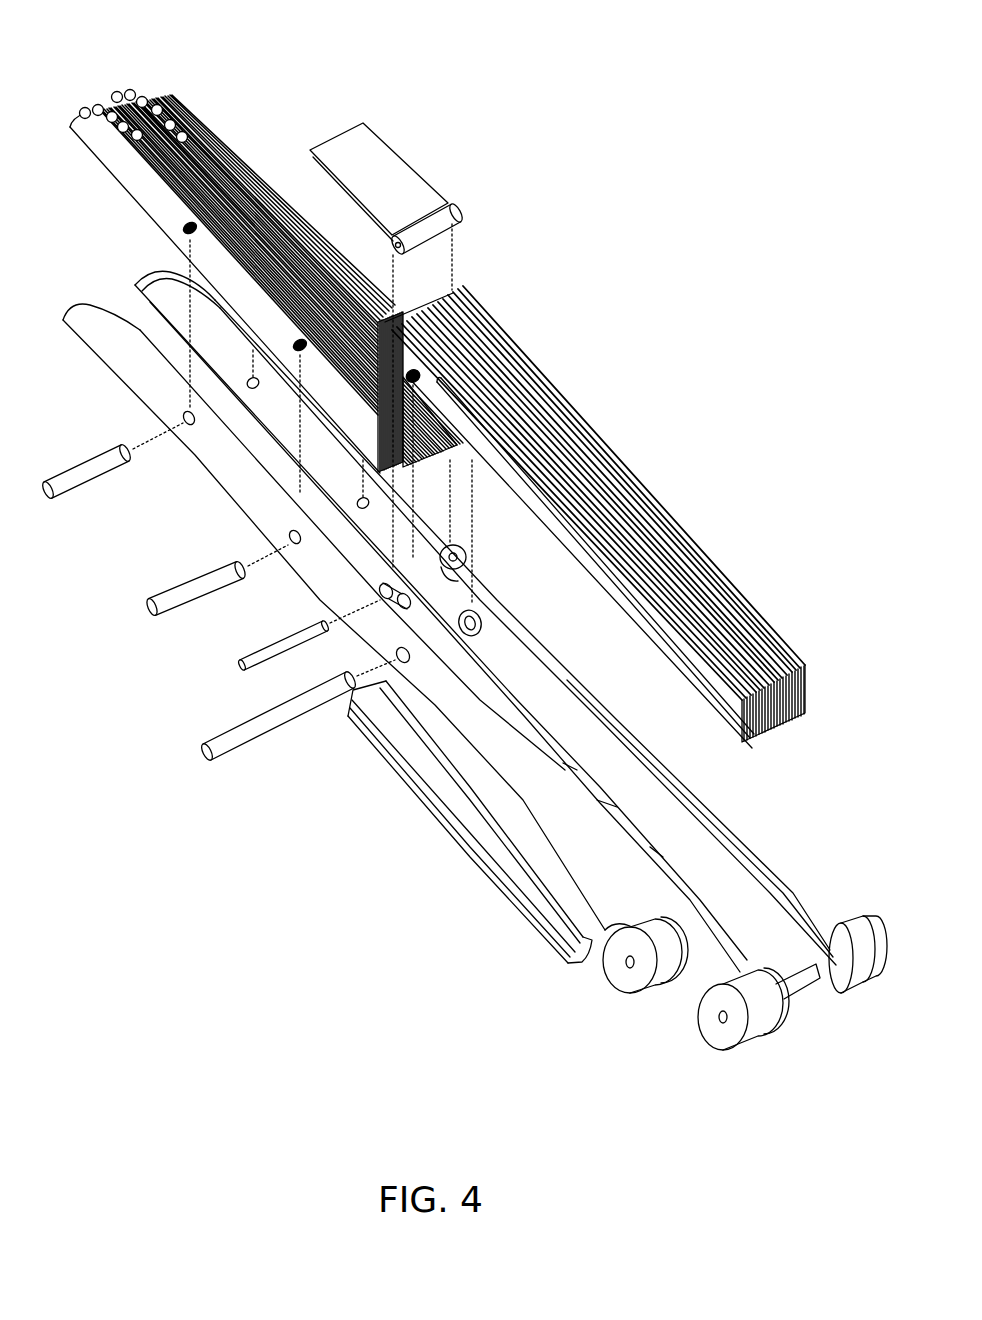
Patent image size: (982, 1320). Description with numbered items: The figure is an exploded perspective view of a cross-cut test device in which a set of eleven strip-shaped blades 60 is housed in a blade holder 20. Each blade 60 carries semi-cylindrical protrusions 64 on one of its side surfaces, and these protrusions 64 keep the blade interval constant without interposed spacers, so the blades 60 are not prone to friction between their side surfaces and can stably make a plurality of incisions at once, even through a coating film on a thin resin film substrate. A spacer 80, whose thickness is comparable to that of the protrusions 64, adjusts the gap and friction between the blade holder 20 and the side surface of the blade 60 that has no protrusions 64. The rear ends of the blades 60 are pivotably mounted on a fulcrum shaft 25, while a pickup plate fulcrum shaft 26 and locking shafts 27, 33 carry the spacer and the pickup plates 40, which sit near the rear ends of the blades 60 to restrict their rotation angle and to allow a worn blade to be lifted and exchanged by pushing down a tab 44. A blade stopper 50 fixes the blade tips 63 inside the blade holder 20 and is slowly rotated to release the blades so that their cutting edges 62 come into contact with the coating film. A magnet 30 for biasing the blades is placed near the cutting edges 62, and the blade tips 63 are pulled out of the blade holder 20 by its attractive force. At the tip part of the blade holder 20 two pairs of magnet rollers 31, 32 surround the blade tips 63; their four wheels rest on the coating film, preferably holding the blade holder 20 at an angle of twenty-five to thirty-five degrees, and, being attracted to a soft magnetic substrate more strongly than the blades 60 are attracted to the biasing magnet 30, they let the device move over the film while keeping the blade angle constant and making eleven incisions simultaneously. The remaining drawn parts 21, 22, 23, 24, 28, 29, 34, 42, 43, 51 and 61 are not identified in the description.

The blade holder 20 is at (578, 835).
The hole 21 is at (397, 654).
The hole 22 is at (290, 539).
The hole 23 is at (182, 414).
The pin 24 is at (378, 590).
The fulcrum shaft 25 is at (202, 756).
The pickup plate fulcrum shaft 26 is at (150, 615).
The locking shaft 27 is at (92, 485).
The rod 28 is at (235, 655).
The tray 29 is at (432, 807).
The magnet 30 is at (665, 855).
The magnet rollers 31 is at (883, 983).
The magnet rollers 32 is at (670, 978).
The locking shaft 33 is at (725, 1017).
The roller shaft 34 is at (628, 968).
The pickup plates 40 is at (227, 142).
The hole 42 is at (196, 224).
The hole 43 is at (305, 338).
The tab 44 is at (150, 100).
The blade stopper 50 is at (392, 185).
The hinge cylinder 51 is at (412, 239).
The blades 60 is at (612, 468).
The plate 61 is at (421, 372).
The cutting edge 62 is at (584, 572).
The blade tips 63 is at (793, 717).
The semi-cylindrical protrusions 64 is at (687, 545).
The spacer 80 is at (740, 898).